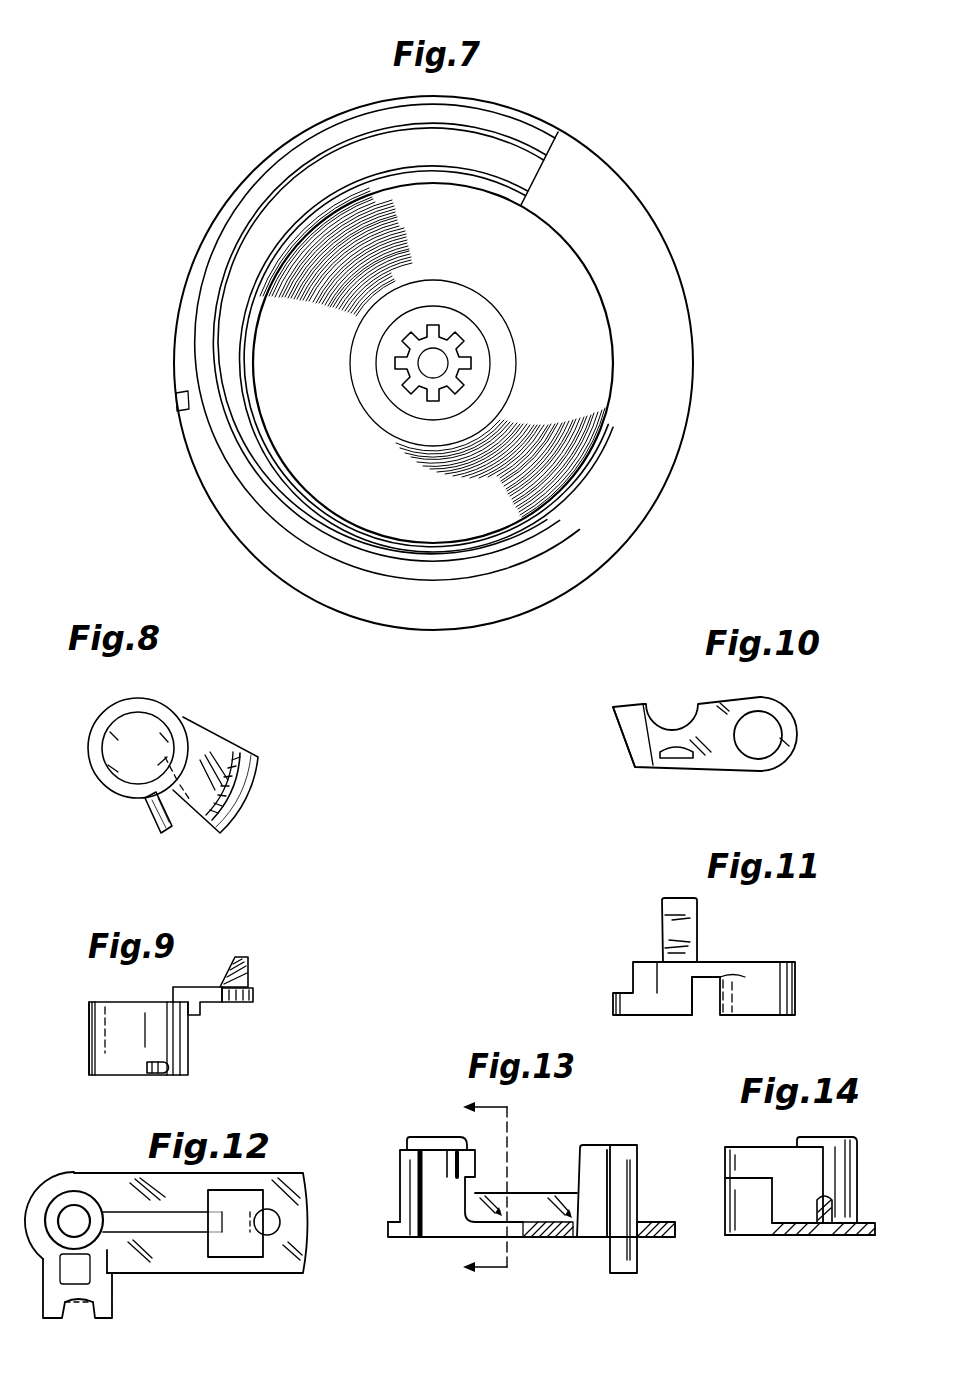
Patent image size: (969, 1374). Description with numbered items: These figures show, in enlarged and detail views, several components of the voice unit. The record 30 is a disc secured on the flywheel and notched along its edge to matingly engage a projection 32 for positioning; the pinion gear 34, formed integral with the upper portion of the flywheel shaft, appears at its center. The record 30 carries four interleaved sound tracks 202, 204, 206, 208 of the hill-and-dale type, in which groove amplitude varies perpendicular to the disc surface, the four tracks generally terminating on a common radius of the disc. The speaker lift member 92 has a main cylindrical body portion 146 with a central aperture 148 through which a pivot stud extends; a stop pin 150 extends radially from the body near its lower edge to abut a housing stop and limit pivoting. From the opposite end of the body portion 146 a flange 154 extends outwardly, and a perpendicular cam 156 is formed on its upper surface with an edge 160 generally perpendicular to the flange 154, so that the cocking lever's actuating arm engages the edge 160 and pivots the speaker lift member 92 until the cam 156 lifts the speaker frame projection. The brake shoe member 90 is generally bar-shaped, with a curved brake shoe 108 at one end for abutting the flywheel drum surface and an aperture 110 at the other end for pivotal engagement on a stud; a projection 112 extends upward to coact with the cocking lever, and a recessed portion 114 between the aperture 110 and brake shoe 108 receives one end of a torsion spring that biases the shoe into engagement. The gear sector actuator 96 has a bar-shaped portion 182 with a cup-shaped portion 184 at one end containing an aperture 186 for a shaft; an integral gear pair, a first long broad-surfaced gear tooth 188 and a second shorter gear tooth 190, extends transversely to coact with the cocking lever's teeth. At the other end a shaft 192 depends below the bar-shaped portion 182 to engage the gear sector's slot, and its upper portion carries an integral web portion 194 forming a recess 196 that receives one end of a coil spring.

In FIG. 7, the record 30 is at (506, 260).
In FIG. 7, the projection 32 is at (176, 402).
In FIG. 7, the pinion gear 34 is at (455, 345).
In FIG. 7, the sound track 202 is at (518, 116).
In FIG. 7, the sound track 204 is at (533, 142).
In FIG. 7, the sound track 206 is at (530, 165).
In FIG. 7, the sound track 208 is at (527, 185).
In FIG. 8, the speaker lift member 92 is at (185, 716).
In FIG. 9, the speaker lift member 92 is at (195, 1042).
In FIG. 8, the main cylindrical body portion 146 is at (135, 698).
In FIG. 9, the main cylindrical body portion 146 is at (90, 1015).
In FIG. 8, the aperture 148 is at (143, 723).
In FIG. 9, the aperture 148 is at (107, 1023).
In FIG. 8, the stop pin 150 is at (153, 825).
In FIG. 9, the stop pin 150 is at (148, 1073).
In FIG. 8, the flange 154 is at (213, 750).
In FIG. 9, the flange 154 is at (253, 998).
In FIG. 8, the cam 156 is at (253, 800).
In FIG. 9, the cam 156 is at (227, 985).
In FIG. 8, the edge 160 is at (247, 753).
In FIG. 10, the brake shoe member 90 is at (733, 690).
In FIG. 11, the brake shoe member 90 is at (696, 973).
In FIG. 10, the brake shoe 108 is at (628, 748).
In FIG. 11, the brake shoe 108 is at (614, 1003).
In FIG. 10, the aperture 110 is at (763, 730).
In FIG. 11, the aperture 110 is at (768, 953).
In FIG. 10, the projection 112 is at (675, 758).
In FIG. 11, the projection 112 is at (697, 919).
In FIG. 11, the recessed portion 114 is at (699, 1000).
In FIG. 12, the gear sector actuator 96 is at (286, 1167).
In FIG. 13, the gear sector actuator 96 is at (546, 1166).
In FIG. 14, the gear sector actuator 96 is at (723, 1143).
In FIG. 12, the bar-shaped portion 182 is at (204, 1263).
In FIG. 13, the bar-shaped portion 182 is at (543, 1233).
In FIG. 14, the bar-shaped portion 182 is at (812, 1235).
In FIG. 12, the cup-shaped portion 184 is at (88, 1196).
In FIG. 13, the cup-shaped portion 184 is at (410, 1137).
In FIG. 14, the cup-shaped portion 184 is at (847, 1120).
In FIG. 12, the aperture 186 is at (72, 1208).
In FIG. 12, the first gear tooth 188 is at (53, 1318).
In FIG. 13, the first gear tooth 188 is at (403, 1185).
In FIG. 14, the first gear tooth 188 is at (750, 1217).
In FIG. 12, the second gear tooth 190 is at (112, 1313).
In FIG. 13, the second gear tooth 190 is at (470, 1160).
In FIG. 14, the second gear tooth 190 is at (748, 1157).
In FIG. 12, the shaft 192 is at (278, 1236).
In FIG. 13, the shaft 192 is at (627, 1192).
In FIG. 12, the web portion 194 is at (217, 1223).
In FIG. 13, the web portion 194 is at (580, 1150).
In FIG. 13, the recess 196 is at (598, 1167).